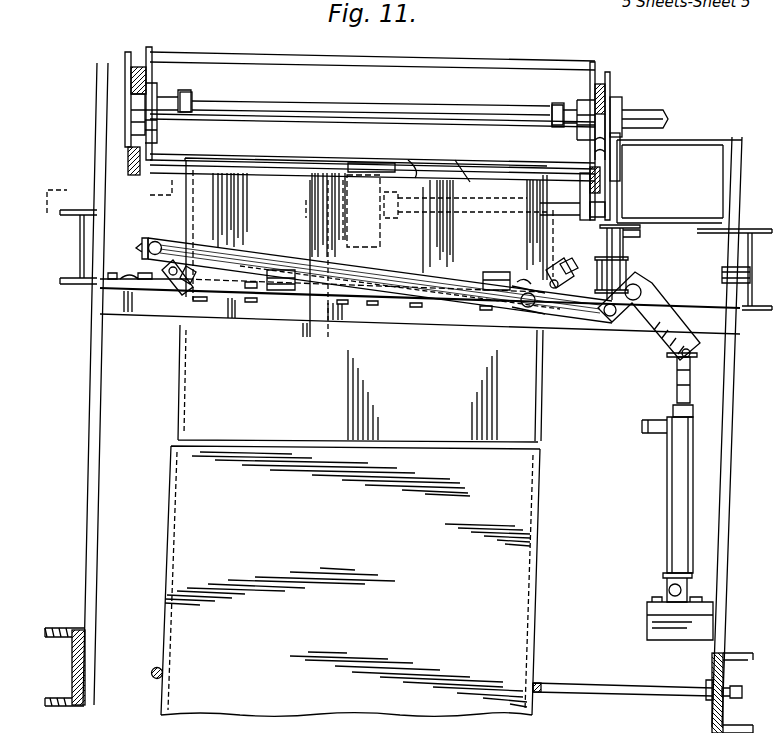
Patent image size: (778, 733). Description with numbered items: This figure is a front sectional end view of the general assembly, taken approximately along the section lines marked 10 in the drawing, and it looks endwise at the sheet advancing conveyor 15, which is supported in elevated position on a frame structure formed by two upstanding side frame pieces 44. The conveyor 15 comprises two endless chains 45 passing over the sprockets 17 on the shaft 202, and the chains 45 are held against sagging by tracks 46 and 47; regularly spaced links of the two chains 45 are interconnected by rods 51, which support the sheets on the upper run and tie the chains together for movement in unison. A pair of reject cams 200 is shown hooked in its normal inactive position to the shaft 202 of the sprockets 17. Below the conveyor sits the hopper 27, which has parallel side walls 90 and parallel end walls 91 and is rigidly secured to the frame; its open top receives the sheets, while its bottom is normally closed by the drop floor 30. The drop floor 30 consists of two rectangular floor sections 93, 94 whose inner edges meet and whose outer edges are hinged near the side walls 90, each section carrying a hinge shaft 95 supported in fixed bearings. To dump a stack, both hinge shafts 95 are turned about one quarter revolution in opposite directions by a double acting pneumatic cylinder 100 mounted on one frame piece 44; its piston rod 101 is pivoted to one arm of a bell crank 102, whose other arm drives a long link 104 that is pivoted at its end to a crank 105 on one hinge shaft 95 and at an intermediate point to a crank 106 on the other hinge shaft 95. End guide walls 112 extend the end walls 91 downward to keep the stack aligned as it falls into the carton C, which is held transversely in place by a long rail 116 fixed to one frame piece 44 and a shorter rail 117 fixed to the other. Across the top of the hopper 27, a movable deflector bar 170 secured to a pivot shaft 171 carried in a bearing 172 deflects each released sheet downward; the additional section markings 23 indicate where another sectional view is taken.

The section line 10- 10 is at (150, 28).
The section line 23- 23 is at (597, 241).
The sheet advancing conveyor 15 is at (517, 56).
The sprockets 17 is at (135, 103).
The hopper 27 is at (176, 214).
The drop floor 30 is at (455, 272).
The side frame pieces 44 is at (86, 487).
The endless chains 45 is at (137, 52).
The track 46 is at (133, 78).
The track 47 is at (128, 160).
The rods 51 is at (450, 62).
The side walls 90 is at (189, 190).
The end walls 91 is at (420, 162).
The floor section 93 is at (496, 272).
The floor section 94 is at (281, 268).
The hinge shaft 95 is at (172, 276).
The double acting pneumatic cylinder 100 is at (668, 480).
The piston rod 101 is at (678, 377).
The bell crank 102 is at (662, 342).
The long link 104 is at (243, 253).
The crank 105 is at (148, 244).
The crank 106 is at (508, 300).
The end guide walls 112 is at (540, 425).
The rail 116 is at (602, 683).
The rail 117 is at (155, 668).
The deflector bar 170 is at (355, 164).
The pivot shaft 171 is at (460, 197).
The bearing 172 is at (305, 212).
The cams 200 is at (185, 92).
The shaft 202 is at (366, 90).
The carton C is at (520, 566).